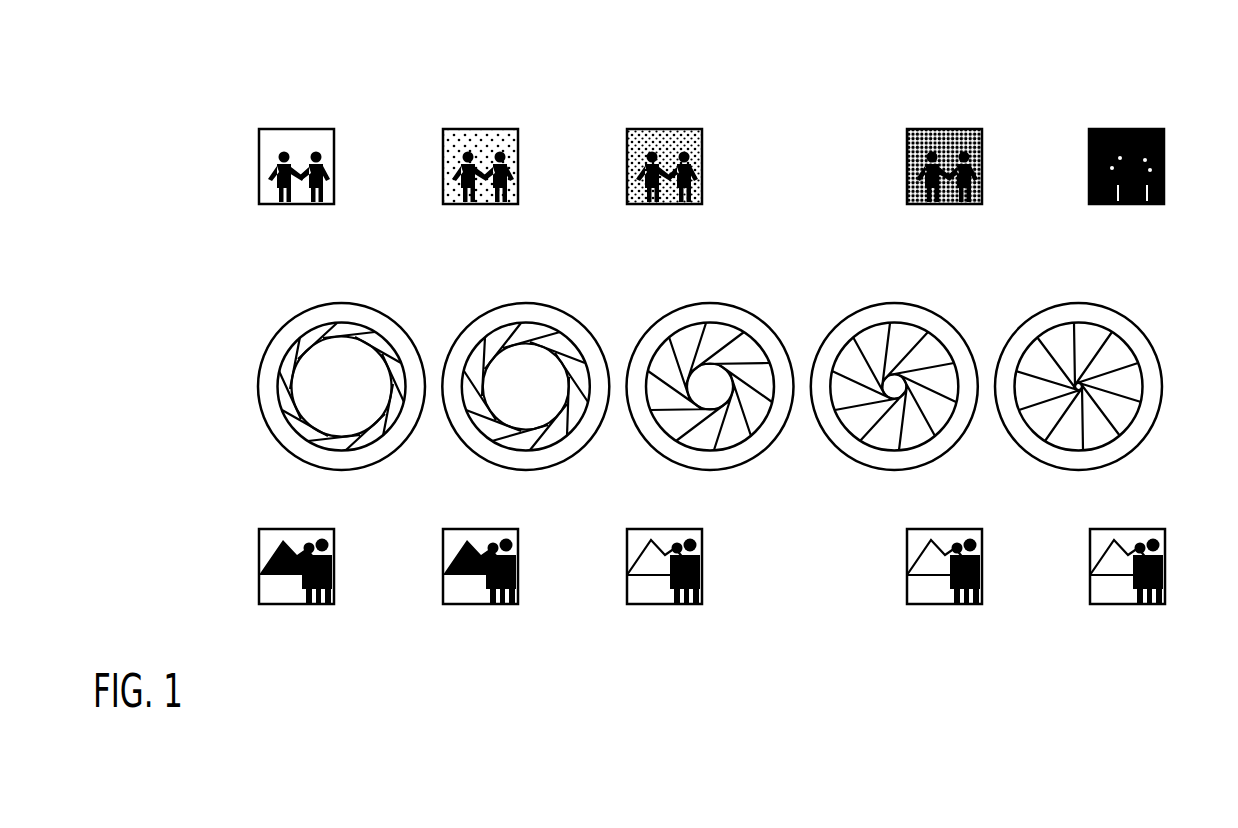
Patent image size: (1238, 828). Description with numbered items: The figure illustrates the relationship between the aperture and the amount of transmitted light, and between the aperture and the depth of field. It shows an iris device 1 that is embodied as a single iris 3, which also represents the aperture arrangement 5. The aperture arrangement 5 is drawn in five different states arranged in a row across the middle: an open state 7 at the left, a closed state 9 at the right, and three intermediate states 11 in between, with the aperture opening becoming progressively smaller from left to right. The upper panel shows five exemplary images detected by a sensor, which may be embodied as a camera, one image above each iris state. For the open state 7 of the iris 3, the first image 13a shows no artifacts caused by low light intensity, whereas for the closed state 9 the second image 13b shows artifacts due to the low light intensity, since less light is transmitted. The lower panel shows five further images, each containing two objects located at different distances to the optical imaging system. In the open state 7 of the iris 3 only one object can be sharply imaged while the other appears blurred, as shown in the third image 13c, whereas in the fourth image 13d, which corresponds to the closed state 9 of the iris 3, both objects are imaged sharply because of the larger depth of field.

The iris device 1 is at (1100, 360).
The single iris 3 is at (1100, 360).
The aperture arrangement 5 is at (1100, 360).
The open state 7 is at (325, 360).
The closed state 9 is at (1095, 360).
The intermediate states 11 is at (710, 359).
The first image 13a is at (263, 131).
The second image 13b is at (1094, 131).
The third image 13c is at (248, 596).
The fourth image 13d is at (1080, 596).